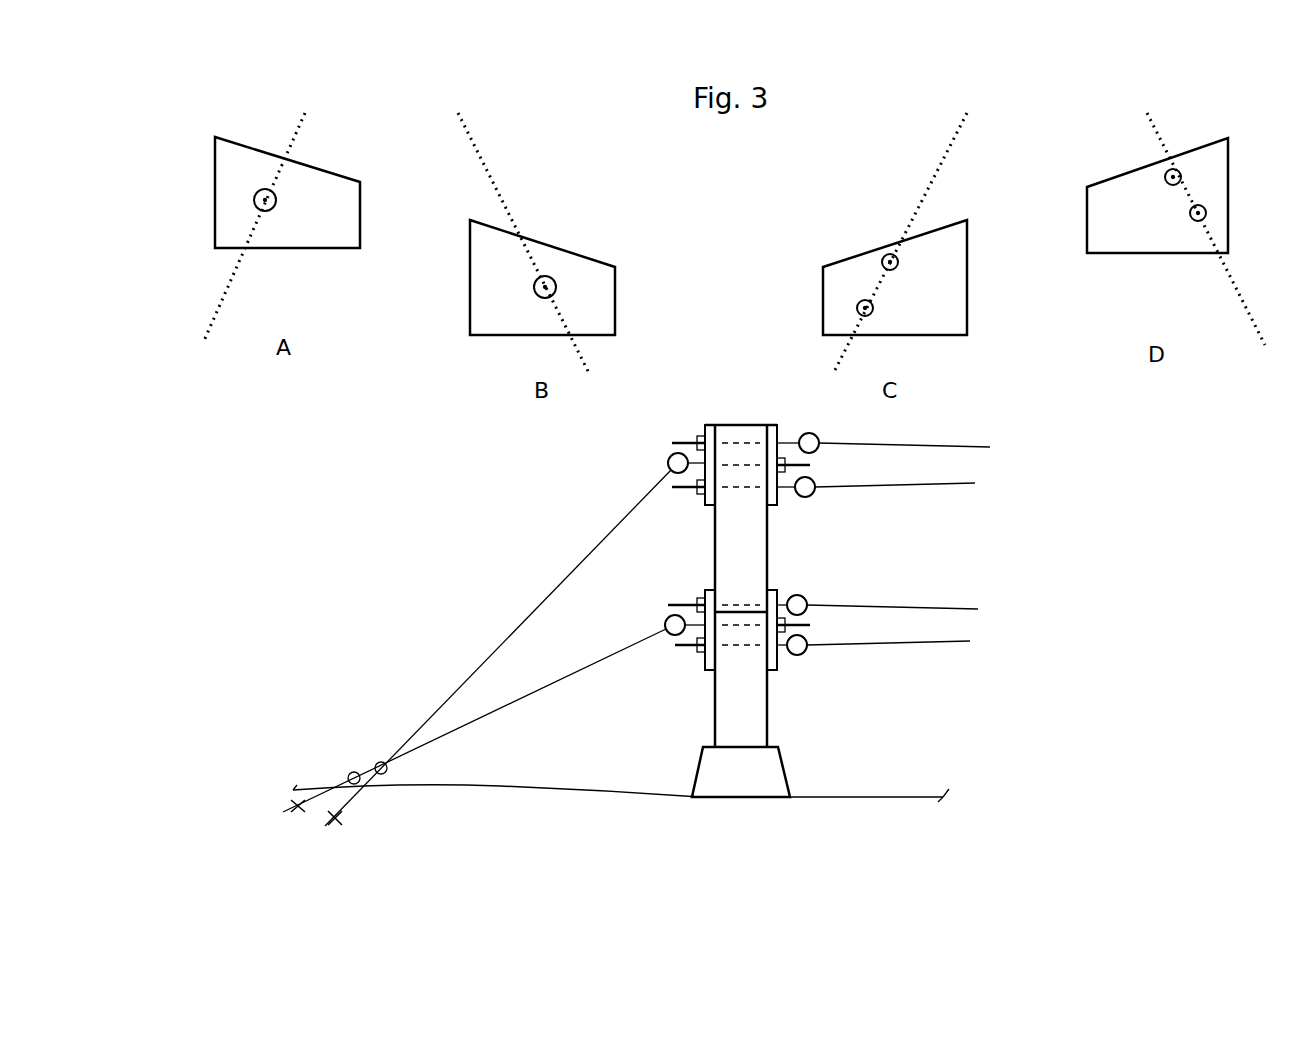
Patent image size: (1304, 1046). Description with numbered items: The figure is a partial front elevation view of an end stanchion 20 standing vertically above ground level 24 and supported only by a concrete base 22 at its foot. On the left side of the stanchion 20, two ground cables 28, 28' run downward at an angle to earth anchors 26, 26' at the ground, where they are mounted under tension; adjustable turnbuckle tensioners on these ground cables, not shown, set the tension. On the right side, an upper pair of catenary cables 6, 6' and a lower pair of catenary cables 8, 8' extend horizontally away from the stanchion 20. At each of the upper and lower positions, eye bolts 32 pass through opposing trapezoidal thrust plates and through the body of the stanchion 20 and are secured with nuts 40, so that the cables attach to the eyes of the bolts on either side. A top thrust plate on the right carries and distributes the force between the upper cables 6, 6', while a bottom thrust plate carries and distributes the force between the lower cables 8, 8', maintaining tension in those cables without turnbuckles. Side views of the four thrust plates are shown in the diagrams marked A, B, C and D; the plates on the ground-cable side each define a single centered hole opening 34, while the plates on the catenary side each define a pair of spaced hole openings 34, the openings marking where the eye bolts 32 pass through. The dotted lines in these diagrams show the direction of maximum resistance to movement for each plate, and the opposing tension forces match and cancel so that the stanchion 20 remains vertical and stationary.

The catenary cable 6 is at (904, 431).
The catenary cable 6' is at (895, 503).
The catenary cable 8 is at (892, 591).
The catenary cable 8' is at (888, 663).
The end stanchion 20 is at (747, 548).
The concrete base 22 is at (748, 783).
The ground level 24 is at (572, 787).
The earth anchor 26 is at (315, 779).
The earth anchor 26' is at (368, 808).
The ground cable 28 is at (474, 719).
The ground cable 28' is at (498, 648).
The eye bolt 32 is at (669, 456).
The hole opening 34 is at (272, 212).
The nut 40 is at (697, 438).